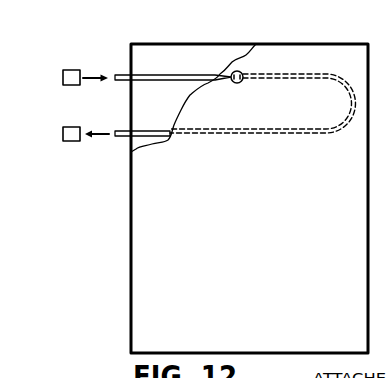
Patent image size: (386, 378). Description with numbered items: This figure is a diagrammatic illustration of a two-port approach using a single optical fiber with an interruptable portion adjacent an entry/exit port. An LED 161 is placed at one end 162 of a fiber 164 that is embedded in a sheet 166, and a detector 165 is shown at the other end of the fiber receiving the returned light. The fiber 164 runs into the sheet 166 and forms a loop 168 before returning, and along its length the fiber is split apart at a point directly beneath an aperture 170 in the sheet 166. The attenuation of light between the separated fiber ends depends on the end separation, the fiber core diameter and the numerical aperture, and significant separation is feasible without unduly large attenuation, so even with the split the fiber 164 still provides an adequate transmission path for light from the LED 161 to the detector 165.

The LED 161 is at (73, 70).
The end of fiber 162 is at (118, 77).
The fiber 164 is at (139, 74).
The detector 165 is at (72, 143).
The sheet 166 is at (244, 272).
The fiber loop 168 is at (247, 60).
The aperture 170 is at (236, 83).